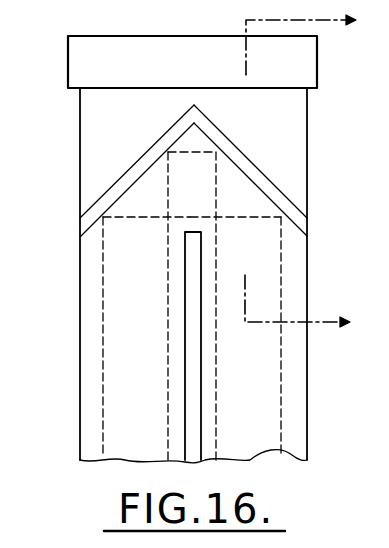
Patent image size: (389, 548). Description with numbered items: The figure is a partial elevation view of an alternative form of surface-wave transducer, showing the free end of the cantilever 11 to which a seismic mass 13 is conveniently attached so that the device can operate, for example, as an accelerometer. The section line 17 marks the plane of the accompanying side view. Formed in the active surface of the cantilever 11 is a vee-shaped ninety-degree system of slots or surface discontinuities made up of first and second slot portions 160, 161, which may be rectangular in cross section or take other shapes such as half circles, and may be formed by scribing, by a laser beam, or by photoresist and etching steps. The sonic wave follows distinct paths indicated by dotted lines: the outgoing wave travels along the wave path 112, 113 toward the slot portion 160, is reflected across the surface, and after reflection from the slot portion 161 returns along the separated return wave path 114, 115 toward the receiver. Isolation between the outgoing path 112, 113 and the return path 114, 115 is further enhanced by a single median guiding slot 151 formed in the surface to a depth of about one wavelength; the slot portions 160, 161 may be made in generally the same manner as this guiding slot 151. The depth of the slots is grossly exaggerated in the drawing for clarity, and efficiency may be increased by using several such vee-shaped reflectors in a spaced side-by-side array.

The cantilever 11 is at (307, 396).
The seismic mass 13 is at (312, 58).
The section line 17- 17 is at (315, 172).
The wave path 112 is at (165, 428).
The wave path 113 is at (103, 337).
The return wave path 114 is at (282, 420).
The return wave path 115 is at (218, 427).
The median slot 151 is at (192, 462).
The first slot portion 160 is at (100, 200).
The second slot portion 161 is at (283, 200).